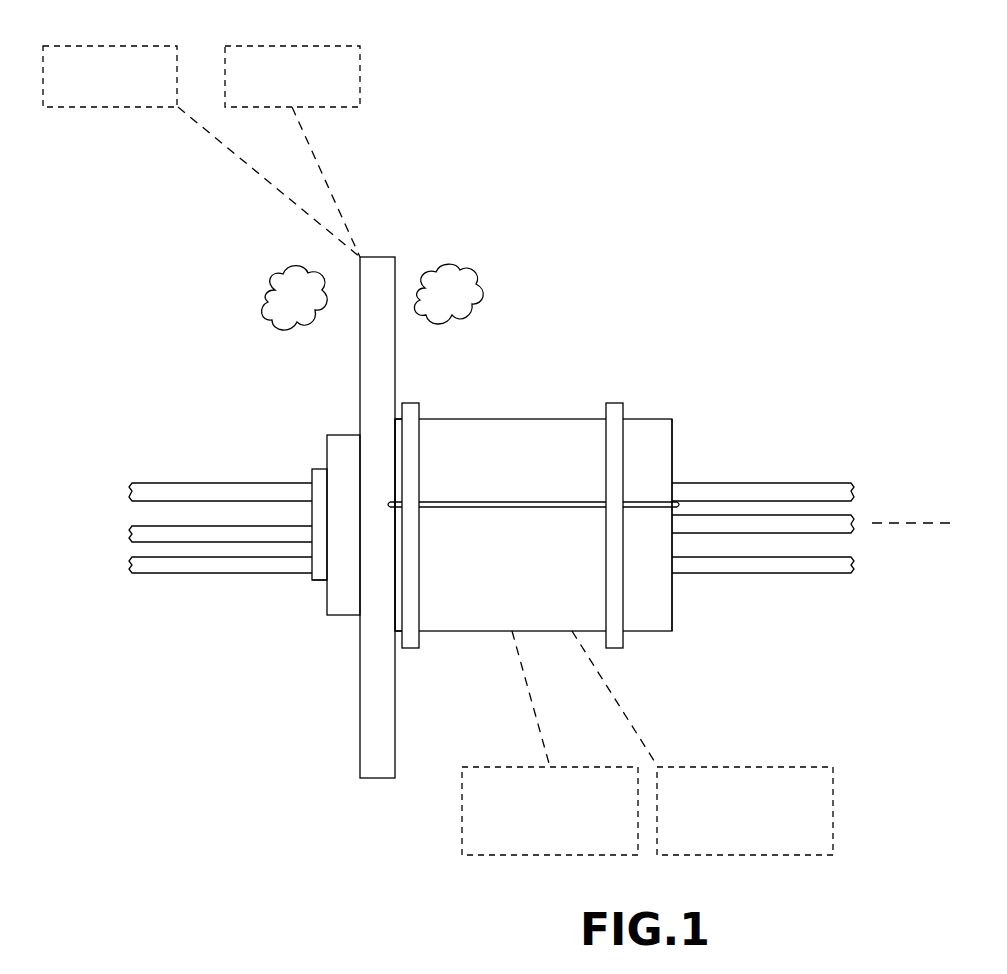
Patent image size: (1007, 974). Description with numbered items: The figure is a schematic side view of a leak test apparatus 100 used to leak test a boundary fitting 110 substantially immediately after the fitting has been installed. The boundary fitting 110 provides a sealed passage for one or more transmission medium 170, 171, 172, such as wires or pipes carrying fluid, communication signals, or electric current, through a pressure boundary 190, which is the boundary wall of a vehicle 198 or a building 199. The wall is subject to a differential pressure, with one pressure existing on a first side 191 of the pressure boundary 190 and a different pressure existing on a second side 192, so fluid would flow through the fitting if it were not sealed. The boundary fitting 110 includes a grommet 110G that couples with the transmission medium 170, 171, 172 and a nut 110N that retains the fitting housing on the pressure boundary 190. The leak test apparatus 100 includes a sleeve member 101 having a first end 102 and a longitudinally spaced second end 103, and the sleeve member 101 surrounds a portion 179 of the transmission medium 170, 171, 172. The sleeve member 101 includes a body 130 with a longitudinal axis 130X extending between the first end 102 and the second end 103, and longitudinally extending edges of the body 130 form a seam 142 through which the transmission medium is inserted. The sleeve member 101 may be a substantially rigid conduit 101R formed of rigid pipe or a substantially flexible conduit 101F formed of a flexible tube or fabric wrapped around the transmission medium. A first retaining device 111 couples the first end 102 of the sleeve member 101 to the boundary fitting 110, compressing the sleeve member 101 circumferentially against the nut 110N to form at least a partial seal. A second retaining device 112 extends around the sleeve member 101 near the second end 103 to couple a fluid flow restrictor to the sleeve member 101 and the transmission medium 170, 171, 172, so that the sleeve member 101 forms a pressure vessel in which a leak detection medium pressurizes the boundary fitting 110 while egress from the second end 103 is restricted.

The leak test apparatus 100 is at (595, 228).
The sleeve member 101 is at (672, 419).
The substantially rigid conduit 101R is at (532, 856).
The substantially flexible conduit 101F is at (745, 856).
The first end 102 is at (392, 430).
The second end 103 is at (682, 443).
The boundary fitting 110 is at (326, 626).
The nut 110N is at (327, 437).
The grommet 110G is at (318, 582).
The first retaining device 111 is at (419, 403).
The second retaining device 112 is at (617, 403).
The body 130 is at (462, 608).
The longitudinal axis 130X is at (912, 527).
The seam 142 is at (570, 500).
The transmission medium 170 is at (180, 483).
The transmission medium 171 is at (150, 526).
The transmission medium 172 is at (160, 573).
The portion of the transmission medium 179 is at (684, 600).
The pressure boundary 190 is at (376, 257).
The first side 191 is at (395, 270).
The second side 192 is at (358, 270).
The vehicle 198 is at (100, 46).
The building 199 is at (300, 46).